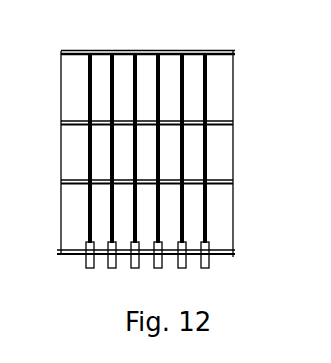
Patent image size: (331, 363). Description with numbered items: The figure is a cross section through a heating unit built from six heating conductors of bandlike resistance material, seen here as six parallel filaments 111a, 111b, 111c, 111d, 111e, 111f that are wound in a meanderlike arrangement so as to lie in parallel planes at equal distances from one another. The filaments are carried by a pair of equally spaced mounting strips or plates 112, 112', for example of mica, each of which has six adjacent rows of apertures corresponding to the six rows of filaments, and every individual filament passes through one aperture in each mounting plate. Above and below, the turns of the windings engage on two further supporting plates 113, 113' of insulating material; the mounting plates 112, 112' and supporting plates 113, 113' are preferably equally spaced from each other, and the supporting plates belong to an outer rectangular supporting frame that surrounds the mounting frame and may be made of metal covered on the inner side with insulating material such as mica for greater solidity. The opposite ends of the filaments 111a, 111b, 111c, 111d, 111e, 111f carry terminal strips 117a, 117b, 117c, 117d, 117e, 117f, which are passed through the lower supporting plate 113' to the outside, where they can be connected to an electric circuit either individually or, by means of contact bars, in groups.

The heating conductor filament 111a is at (88, 63).
The heating conductor filament 111b is at (110, 63).
The heating conductor filament 111c is at (133, 63).
The heating conductor filament 111d is at (156, 63).
The heating conductor filament 111e is at (180, 63).
The heating conductor filament 111f is at (203, 63).
The mounting plate 112 is at (127, 110).
The mounting plate 112' is at (127, 167).
The supporting plate 113 is at (160, 44).
The supporting plate 113' is at (160, 274).
The terminal strip 117a is at (78, 264).
The terminal strip 117b is at (110, 264).
The terminal strip 117c is at (133, 264).
The terminal strip 117d is at (156, 264).
The terminal strip 117e is at (180, 264).
The terminal strip 117f is at (203, 264).